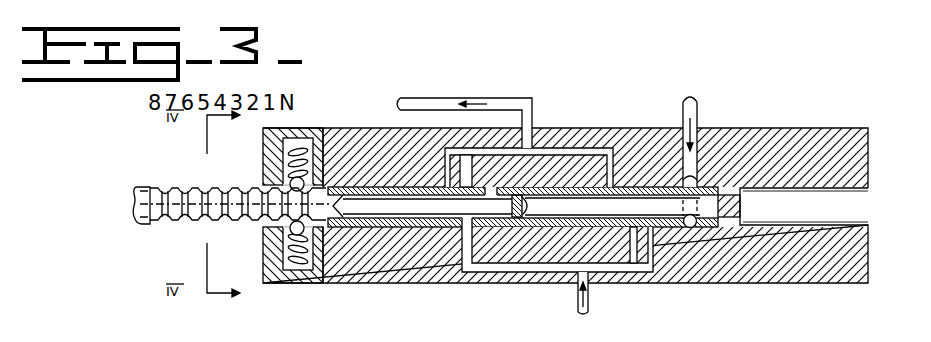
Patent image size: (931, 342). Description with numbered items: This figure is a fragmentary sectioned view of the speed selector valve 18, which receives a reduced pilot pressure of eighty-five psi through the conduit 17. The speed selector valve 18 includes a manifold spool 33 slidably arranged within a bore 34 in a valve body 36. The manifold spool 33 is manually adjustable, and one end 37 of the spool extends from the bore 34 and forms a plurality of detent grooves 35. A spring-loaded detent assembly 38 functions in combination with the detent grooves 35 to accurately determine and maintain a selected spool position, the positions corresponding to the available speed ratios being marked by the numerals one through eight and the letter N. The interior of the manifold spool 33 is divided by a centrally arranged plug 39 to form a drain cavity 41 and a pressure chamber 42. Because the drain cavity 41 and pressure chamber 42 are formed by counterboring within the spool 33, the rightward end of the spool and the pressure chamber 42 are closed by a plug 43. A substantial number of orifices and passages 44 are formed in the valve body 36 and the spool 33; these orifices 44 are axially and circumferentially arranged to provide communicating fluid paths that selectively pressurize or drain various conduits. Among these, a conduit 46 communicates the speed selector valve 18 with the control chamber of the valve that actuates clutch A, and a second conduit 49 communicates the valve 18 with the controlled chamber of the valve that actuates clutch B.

The conduit 17 is at (692, 110).
The speed selector valve 18 is at (770, 124).
The manifold spool 33 is at (565, 226).
The bore 34 is at (776, 189).
The detent grooves 35 is at (155, 187).
The valve body 36 is at (770, 265).
The end of the spool 37 is at (172, 228).
The spring-loaded detent assembly 38 is at (277, 168).
The plug 39 is at (517, 216).
The drain cavity 41 is at (426, 227).
The pressure chamber 42 is at (668, 212).
The plug 43 is at (733, 209).
The orifices and passages 44 is at (325, 228).
The conduit 46 is at (518, 106).
The second conduit 49 is at (578, 292).